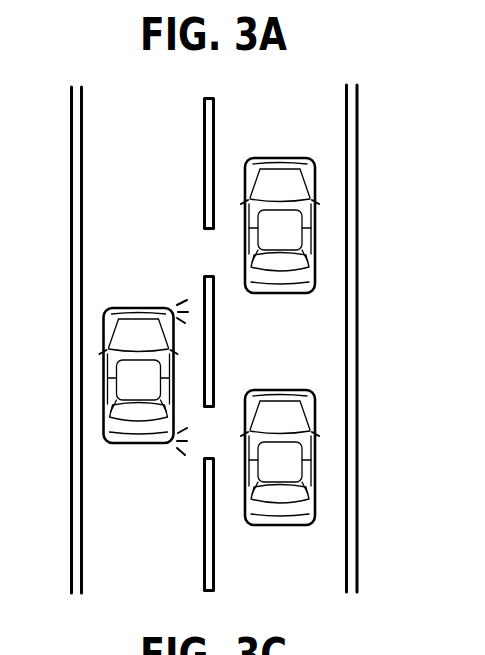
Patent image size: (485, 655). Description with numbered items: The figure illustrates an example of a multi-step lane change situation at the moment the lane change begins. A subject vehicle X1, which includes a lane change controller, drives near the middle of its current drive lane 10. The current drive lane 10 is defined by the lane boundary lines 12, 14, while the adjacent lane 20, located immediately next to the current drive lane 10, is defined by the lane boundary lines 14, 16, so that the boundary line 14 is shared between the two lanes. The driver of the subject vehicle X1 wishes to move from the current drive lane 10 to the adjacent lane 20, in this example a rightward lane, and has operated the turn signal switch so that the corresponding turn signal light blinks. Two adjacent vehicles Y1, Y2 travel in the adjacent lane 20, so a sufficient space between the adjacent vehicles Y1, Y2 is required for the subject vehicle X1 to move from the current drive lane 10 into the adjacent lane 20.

The current drive lane 10 is at (137, 527).
The lane boundary line 12 is at (70, 138).
The lane boundary line 14 is at (202, 138).
The lane boundary line 16 is at (358, 137).
The adjacent lane 20 is at (279, 542).
The subject vehicle X1 is at (124, 309).
The adjacent vehicle Y1 is at (262, 158).
The adjacent vehicle Y2 is at (263, 391).